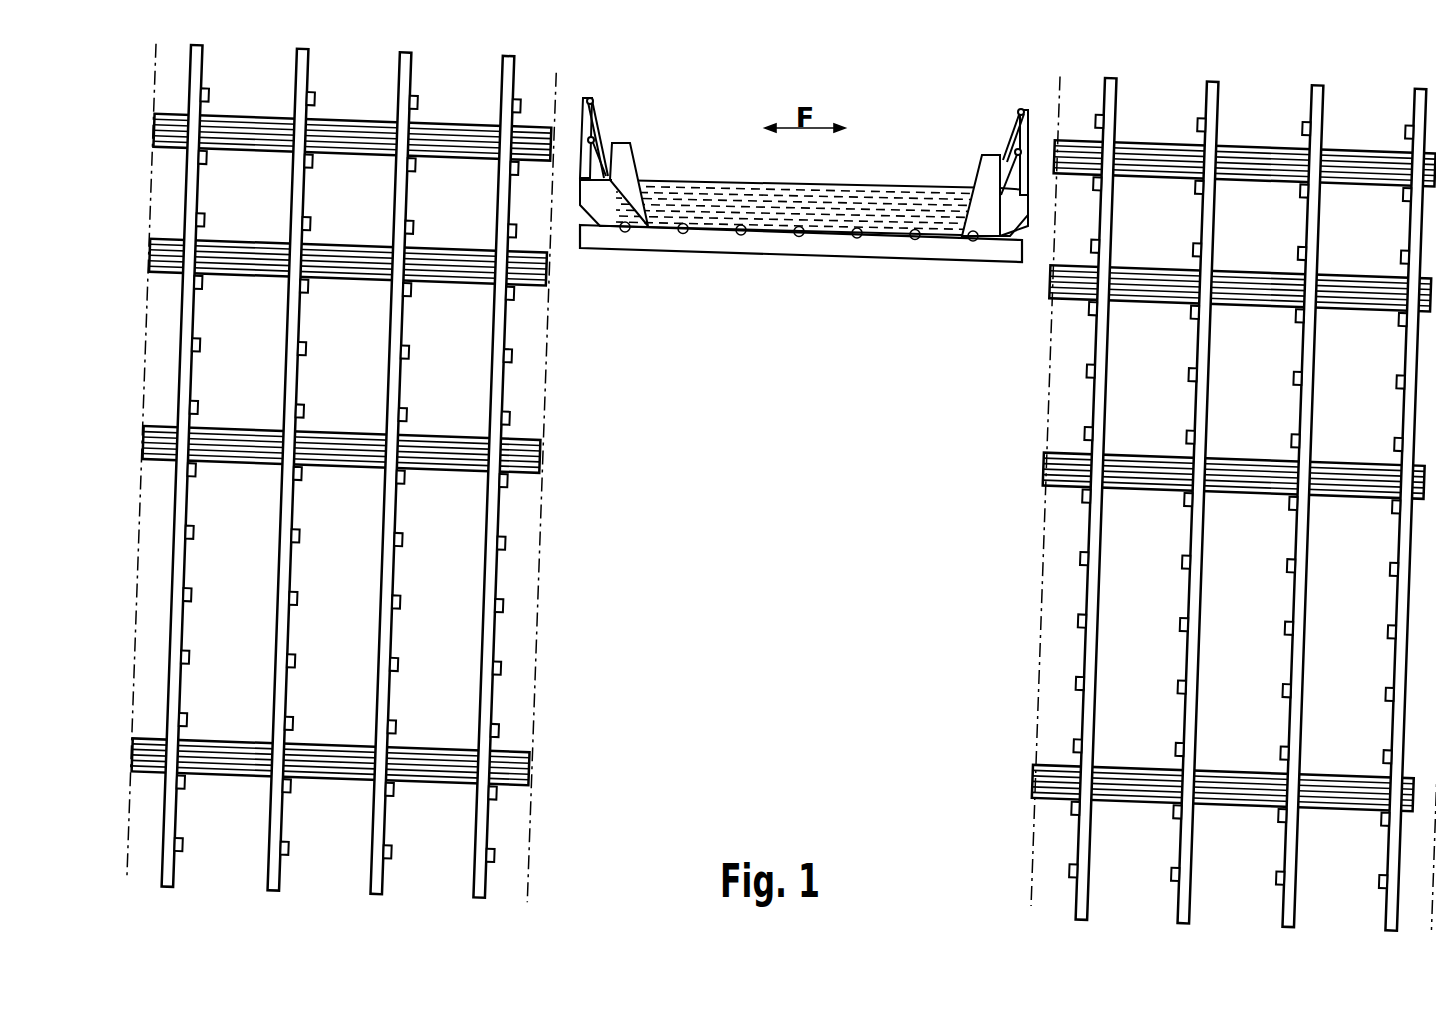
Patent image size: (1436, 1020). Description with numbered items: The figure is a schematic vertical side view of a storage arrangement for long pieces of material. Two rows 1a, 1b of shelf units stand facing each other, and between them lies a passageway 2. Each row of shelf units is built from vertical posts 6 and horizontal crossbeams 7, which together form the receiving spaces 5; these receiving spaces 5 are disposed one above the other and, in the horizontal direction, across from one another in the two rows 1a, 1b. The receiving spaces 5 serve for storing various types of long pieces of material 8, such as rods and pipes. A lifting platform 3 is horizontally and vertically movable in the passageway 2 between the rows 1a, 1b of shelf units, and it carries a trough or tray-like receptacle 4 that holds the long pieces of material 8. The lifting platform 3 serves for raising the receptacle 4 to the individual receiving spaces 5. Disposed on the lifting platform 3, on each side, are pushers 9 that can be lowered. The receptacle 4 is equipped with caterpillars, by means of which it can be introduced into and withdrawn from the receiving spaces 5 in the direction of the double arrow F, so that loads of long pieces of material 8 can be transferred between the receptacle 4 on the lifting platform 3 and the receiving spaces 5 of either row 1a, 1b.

The row of shelf units 1a is at (533, 694).
The row of shelf units 1b is at (1021, 699).
The passageway 2 is at (777, 408).
The lifting platform 3 is at (768, 250).
The receptacle 4 is at (1025, 212).
The receiving spaces 5 is at (516, 324).
The vertical posts 6 is at (385, 620).
The horizontal crossbeams 7 is at (500, 662).
The long pieces of material 8 is at (540, 455).
The pushers 9 is at (575, 105).